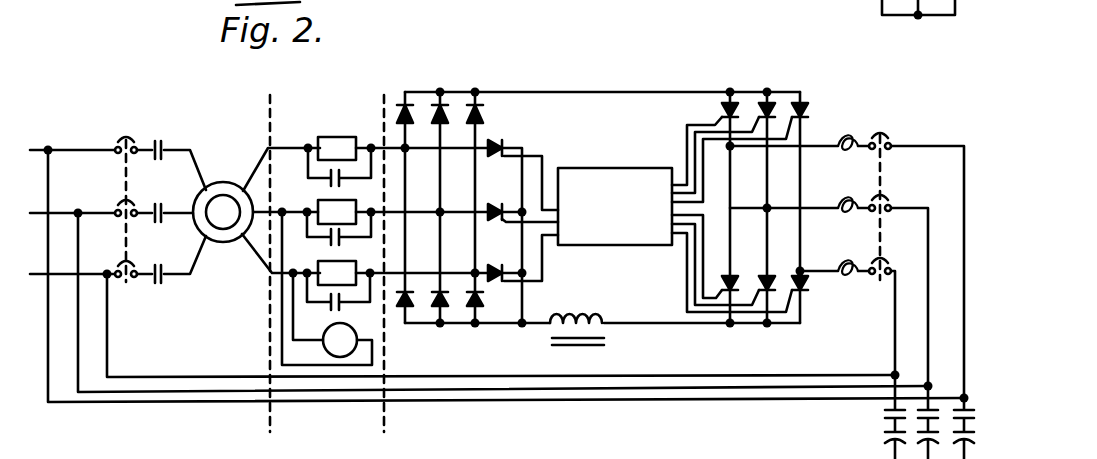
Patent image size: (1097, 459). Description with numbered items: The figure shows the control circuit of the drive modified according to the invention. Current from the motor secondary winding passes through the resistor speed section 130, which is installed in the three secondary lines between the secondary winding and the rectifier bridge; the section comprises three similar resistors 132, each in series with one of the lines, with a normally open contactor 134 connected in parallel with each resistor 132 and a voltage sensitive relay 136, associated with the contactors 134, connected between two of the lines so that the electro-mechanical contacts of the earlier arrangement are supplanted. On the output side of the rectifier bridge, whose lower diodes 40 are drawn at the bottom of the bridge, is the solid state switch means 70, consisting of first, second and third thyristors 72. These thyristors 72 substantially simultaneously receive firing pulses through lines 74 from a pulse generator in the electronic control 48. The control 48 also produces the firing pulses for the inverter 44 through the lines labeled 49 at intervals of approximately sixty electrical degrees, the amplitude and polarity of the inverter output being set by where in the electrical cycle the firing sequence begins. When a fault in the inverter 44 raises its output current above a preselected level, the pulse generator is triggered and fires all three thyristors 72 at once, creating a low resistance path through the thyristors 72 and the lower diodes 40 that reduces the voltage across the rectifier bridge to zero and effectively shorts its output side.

The resistor speed section 130 is at (349, 255).
The resistor 132 is at (318, 200).
The normally open contactor 134 is at (341, 165).
The voltage sensitive relay 136 is at (340, 358).
The lower diodes 40 is at (456, 300).
The solid state switch means 70 is at (547, 186).
The thyristor 72 is at (503, 142).
The firing pulse lines 74 is at (530, 157).
The electronic control circuitry 48 is at (613, 168).
The firing pulse lines 49 is at (688, 151).
The inverter 44 is at (815, 109).